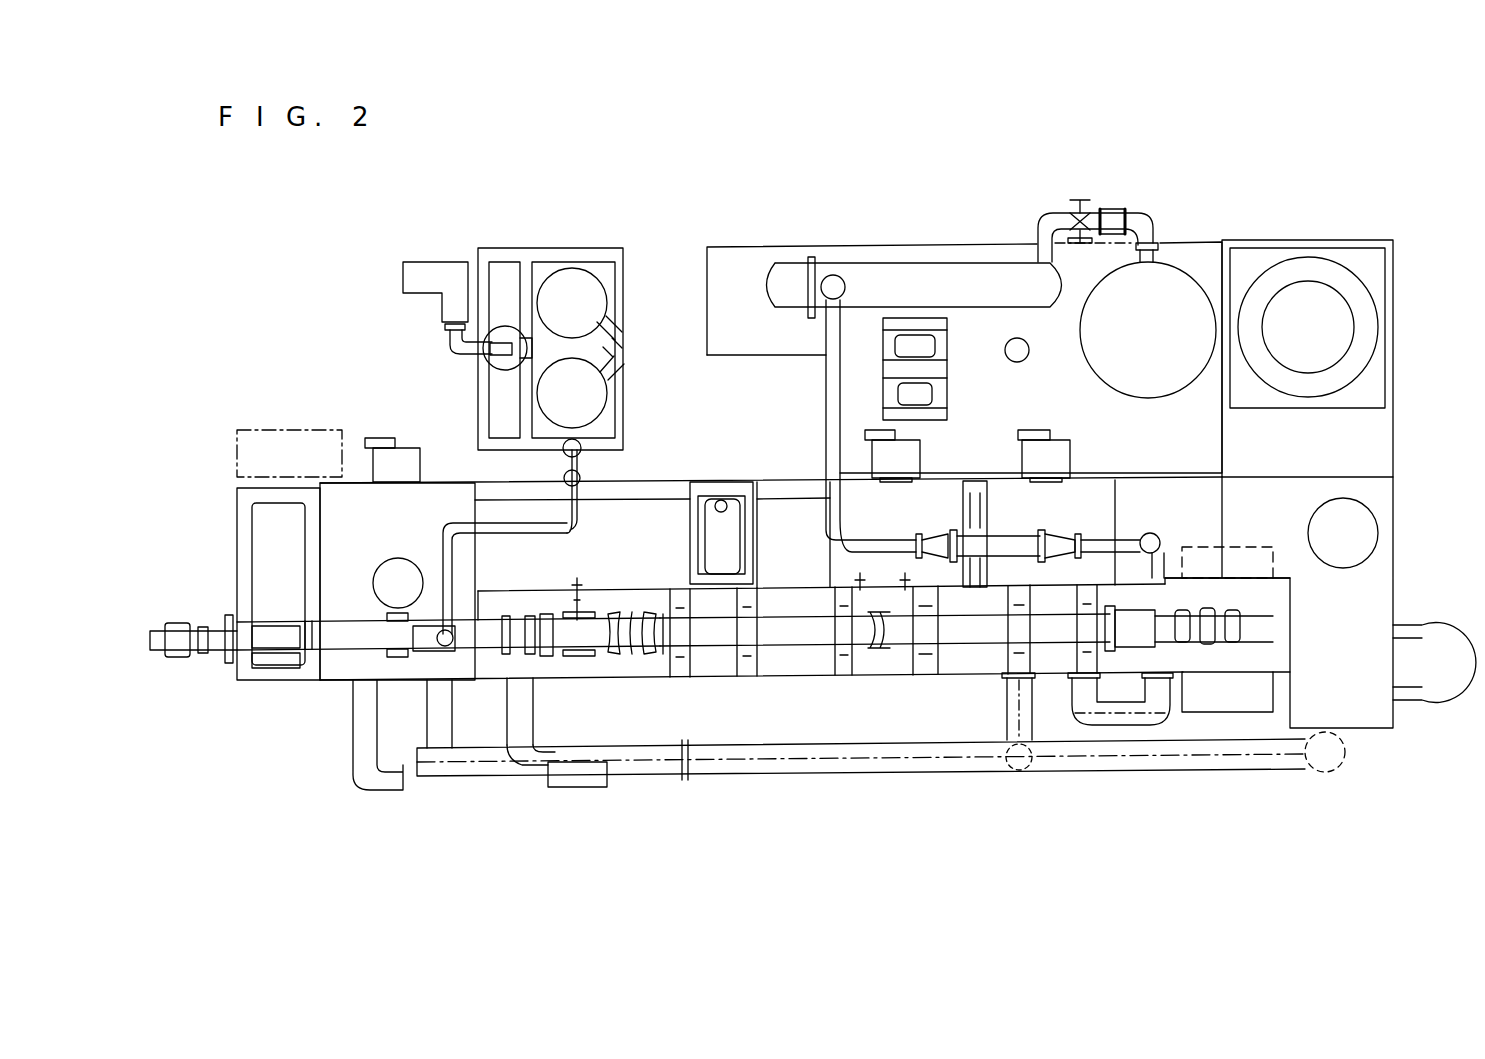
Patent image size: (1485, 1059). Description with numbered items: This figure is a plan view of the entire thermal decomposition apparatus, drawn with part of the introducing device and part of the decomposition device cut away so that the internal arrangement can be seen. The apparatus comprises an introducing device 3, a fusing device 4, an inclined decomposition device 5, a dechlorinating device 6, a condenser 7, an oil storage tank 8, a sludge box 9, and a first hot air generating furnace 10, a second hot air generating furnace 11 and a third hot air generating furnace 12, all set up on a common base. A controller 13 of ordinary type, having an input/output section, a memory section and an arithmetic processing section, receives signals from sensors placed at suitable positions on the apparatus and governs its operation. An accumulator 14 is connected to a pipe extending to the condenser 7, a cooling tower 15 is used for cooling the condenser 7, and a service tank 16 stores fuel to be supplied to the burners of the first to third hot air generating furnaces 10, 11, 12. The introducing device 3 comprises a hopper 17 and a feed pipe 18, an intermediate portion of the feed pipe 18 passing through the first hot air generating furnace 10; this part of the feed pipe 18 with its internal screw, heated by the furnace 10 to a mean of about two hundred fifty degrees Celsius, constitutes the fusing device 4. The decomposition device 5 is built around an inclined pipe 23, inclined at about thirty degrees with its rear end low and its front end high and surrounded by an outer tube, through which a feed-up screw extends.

The introducing device 3 is at (255, 690).
The fusing device 4 is at (352, 483).
The inclined decomposition device 5 is at (785, 678).
The dechlorinating device 6 is at (577, 248).
The condenser 7 is at (925, 262).
The oil storage tank 8 is at (1187, 262).
The sludge box 9 is at (1227, 707).
The first hot air generating furnace 10 is at (424, 502).
The second hot air generating furnace 11 is at (925, 505).
The third hot air generating furnace 12 is at (1085, 503).
The controller 13 is at (250, 430).
The accumulator 14 is at (1003, 540).
The cooling tower 15 is at (1372, 300).
The service tank 16 is at (1370, 525).
The hopper 17 is at (257, 562).
The feed pipe 18 is at (352, 640).
The inclined pipe 23 is at (716, 640).